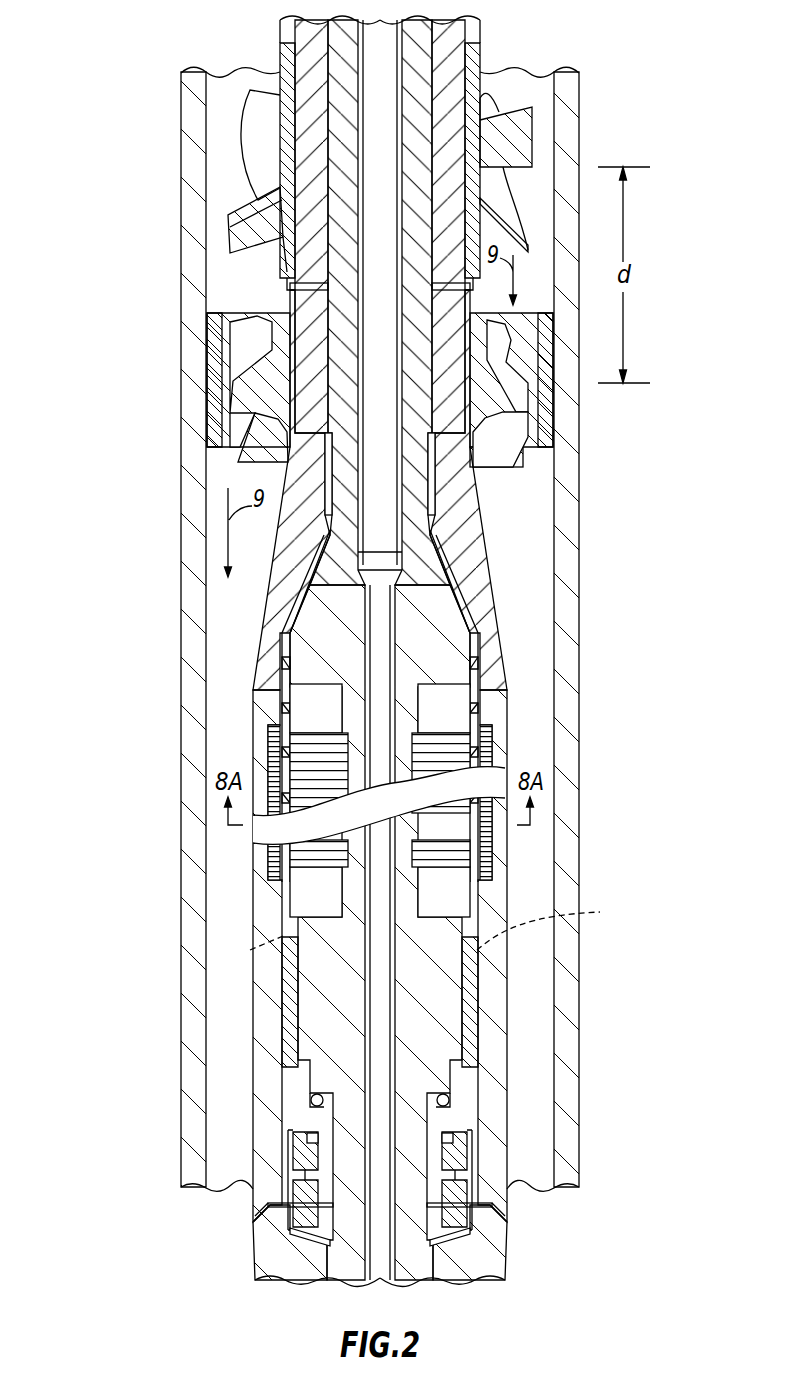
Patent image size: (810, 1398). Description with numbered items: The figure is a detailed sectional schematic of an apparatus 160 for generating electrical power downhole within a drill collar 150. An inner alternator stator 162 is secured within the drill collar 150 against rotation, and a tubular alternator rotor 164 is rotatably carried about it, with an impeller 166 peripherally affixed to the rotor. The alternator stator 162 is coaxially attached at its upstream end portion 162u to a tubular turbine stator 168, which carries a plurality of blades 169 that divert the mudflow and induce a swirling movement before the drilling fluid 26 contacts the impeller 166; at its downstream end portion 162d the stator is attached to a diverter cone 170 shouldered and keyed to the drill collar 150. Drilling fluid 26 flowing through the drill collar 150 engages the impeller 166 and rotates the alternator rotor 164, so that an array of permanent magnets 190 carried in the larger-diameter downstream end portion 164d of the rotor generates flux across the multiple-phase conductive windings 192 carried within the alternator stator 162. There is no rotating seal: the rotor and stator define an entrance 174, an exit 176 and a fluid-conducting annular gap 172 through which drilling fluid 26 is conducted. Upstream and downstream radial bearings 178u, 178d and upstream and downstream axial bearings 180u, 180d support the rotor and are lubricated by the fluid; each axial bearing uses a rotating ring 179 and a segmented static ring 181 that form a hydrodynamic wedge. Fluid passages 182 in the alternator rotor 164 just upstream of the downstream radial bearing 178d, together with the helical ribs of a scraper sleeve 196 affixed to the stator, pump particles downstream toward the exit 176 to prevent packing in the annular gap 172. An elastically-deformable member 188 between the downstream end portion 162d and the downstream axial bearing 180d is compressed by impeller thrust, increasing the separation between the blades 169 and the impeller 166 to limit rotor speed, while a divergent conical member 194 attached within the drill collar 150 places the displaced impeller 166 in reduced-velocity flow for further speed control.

The drill collar 150 is at (572, 647).
The apparatus 160 is at (136, 380).
The alternator stator 162 is at (420, 608).
The upstream end portion of the alternator stator 162u is at (347, 262).
The downstream end portion of the alternator stator 162d is at (510, 1257).
The alternator rotor 164 is at (280, 611).
The downstream end portion of the alternator rotor 164d is at (500, 1130).
The impeller 166 is at (500, 407).
The turbine stator 168 is at (310, 140).
The blades 169 is at (258, 162).
The diverter cone 170 is at (497, 1240).
The annular gap 172 is at (475, 693).
The entrance 174 is at (264, 295).
The exit 176 is at (233, 1226).
The upstream radial bearing 178u is at (325, 472).
The downstream radial bearing 178d is at (287, 985).
The rotating ring 179 is at (303, 1118).
The upstream axial bearing 180u is at (278, 1166).
The downstream axial bearing 180d is at (270, 1225).
The segmented static ring 181 is at (310, 1098).
The fluid passages 182 is at (600, 912).
The elastically-deformable member 188 is at (293, 1267).
The permanent magnets 190 is at (455, 745).
The conductive windings 192 is at (457, 835).
The divergent conical member 194 is at (548, 410).
The scraper sleeve 196 is at (283, 695).
The drilling fluid 26 is at (530, 537).